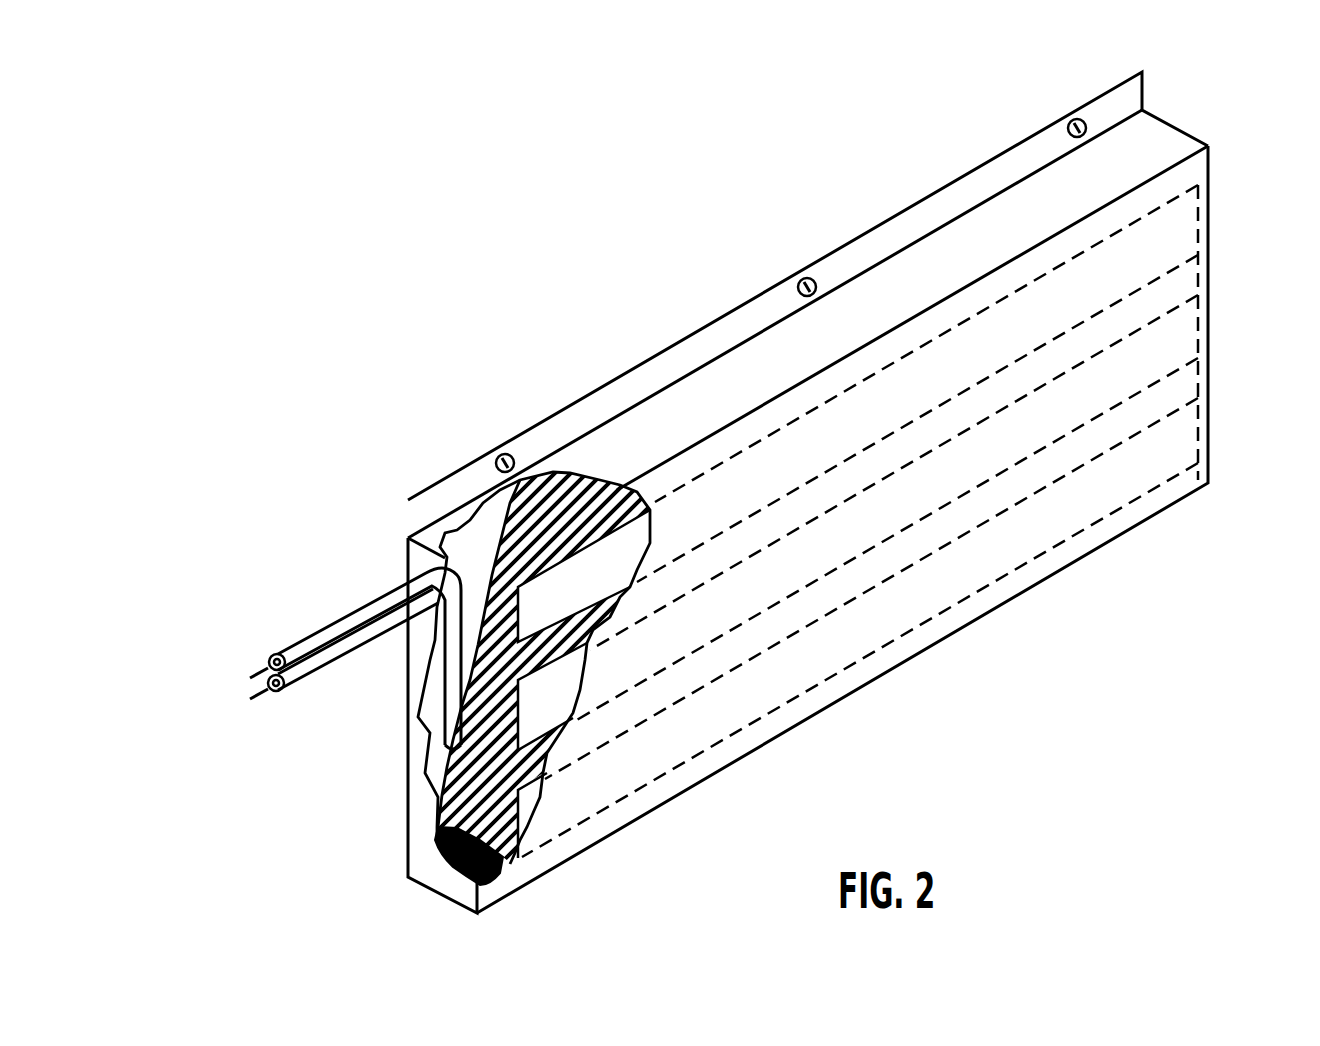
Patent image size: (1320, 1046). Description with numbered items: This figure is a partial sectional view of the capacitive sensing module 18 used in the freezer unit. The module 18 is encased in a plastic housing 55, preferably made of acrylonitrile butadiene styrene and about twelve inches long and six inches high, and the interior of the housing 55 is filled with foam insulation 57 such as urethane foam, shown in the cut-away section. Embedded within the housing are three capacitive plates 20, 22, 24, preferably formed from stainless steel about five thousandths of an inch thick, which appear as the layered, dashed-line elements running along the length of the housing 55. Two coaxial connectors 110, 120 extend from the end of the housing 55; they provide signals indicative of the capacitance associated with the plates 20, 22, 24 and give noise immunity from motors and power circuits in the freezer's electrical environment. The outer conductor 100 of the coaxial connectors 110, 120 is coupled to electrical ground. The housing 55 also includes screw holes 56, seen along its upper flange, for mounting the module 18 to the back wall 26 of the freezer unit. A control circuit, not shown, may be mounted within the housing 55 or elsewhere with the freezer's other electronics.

The capacitive sensing module 18 is at (645, 174).
The capacitive plate 20 is at (1208, 438).
The capacitive plate 22 is at (1208, 338).
The capacitive plate 24 is at (1208, 226).
The back wall 26 is at (480, 805).
The plastic housing 55 is at (900, 303).
The screw holes 56 is at (498, 457).
The foam insulation 57 is at (572, 498).
The outer conductor 100 is at (352, 623).
The coaxial connector 110 is at (262, 692).
The coaxial connector 120 is at (264, 668).